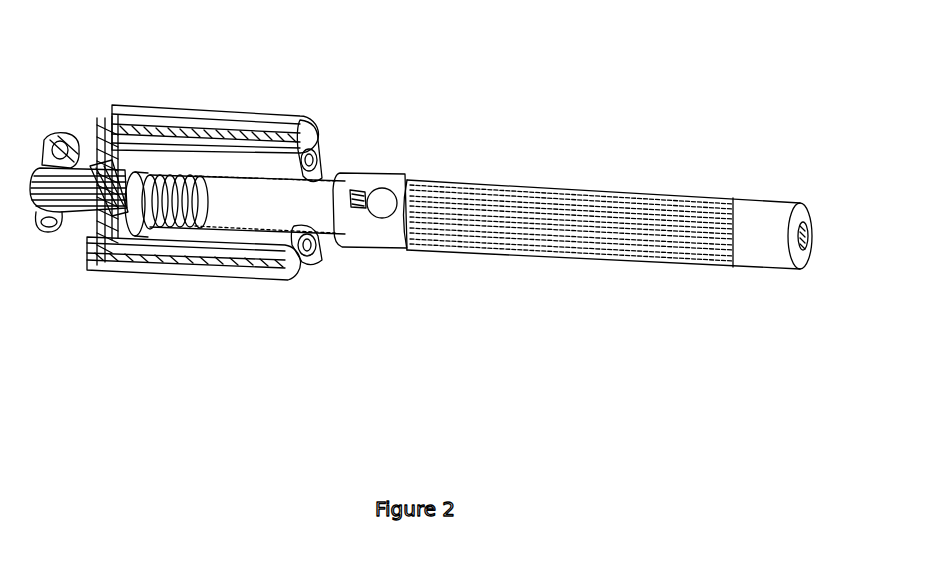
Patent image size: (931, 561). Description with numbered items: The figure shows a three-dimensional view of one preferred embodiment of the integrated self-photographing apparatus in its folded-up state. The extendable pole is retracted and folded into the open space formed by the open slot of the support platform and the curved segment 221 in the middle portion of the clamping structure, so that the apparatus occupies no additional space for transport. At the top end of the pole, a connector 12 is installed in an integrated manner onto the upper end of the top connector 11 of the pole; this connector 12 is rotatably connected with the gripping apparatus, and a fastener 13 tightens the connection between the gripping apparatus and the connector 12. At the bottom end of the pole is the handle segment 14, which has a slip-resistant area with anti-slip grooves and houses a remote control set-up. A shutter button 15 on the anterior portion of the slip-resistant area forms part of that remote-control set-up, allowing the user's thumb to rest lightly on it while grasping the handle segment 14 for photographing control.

The top connector 11 is at (130, 213).
The connector 12 is at (80, 173).
The fastener 13 is at (53, 145).
The handle segment 14 is at (613, 200).
The shutter button 15 is at (383, 197).
The curved segment 221 is at (327, 178).